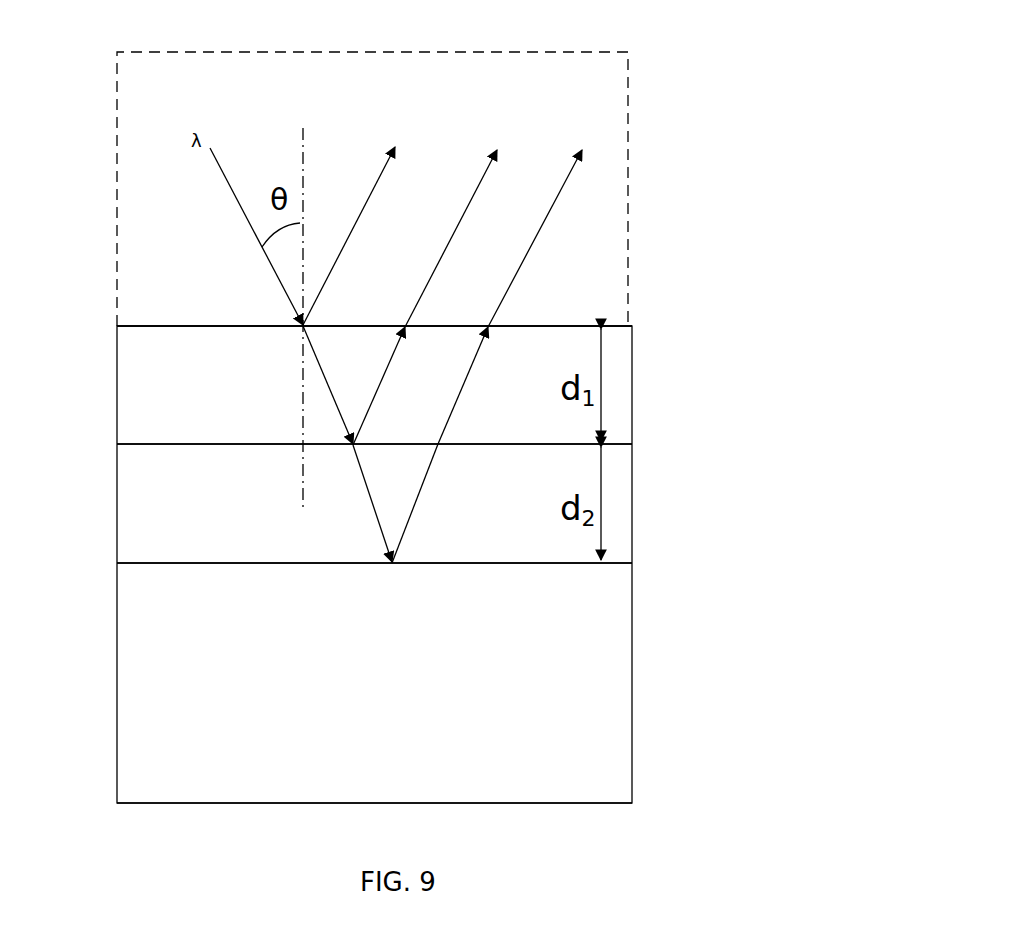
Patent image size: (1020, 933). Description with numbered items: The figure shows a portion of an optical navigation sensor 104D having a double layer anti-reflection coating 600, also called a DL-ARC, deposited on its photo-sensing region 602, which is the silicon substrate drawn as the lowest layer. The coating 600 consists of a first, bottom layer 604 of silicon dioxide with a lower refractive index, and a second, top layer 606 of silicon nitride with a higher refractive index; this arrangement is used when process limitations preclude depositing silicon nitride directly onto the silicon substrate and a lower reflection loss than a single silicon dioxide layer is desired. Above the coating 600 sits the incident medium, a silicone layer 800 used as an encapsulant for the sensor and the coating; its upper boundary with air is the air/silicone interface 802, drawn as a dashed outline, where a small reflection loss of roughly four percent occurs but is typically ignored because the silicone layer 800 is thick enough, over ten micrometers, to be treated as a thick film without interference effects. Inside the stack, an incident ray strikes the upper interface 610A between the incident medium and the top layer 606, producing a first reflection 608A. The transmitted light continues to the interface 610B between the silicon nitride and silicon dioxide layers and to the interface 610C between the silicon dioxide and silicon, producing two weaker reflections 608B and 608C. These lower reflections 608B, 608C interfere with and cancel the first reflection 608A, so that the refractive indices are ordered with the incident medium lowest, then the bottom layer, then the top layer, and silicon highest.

The air/silicone interface 802 is at (108, 52).
The silicone layer 800 is at (367, 279).
The optical navigation sensor 104D is at (680, 70).
The double layer anti-reflection coating 600 is at (787, 330).
The second layer 606 is at (632, 379).
The first layer 604 is at (632, 498).
The photo-sensing region 602 is at (632, 601).
The air/Si3N4 interface 610A is at (108, 326).
The Si3N4/SiO2 interface 610B is at (108, 444).
The SiO2/Si interface 610C is at (108, 563).
The first reflection 608A is at (364, 207).
The second reflection 608B is at (425, 287).
The third reflection 608C is at (523, 265).